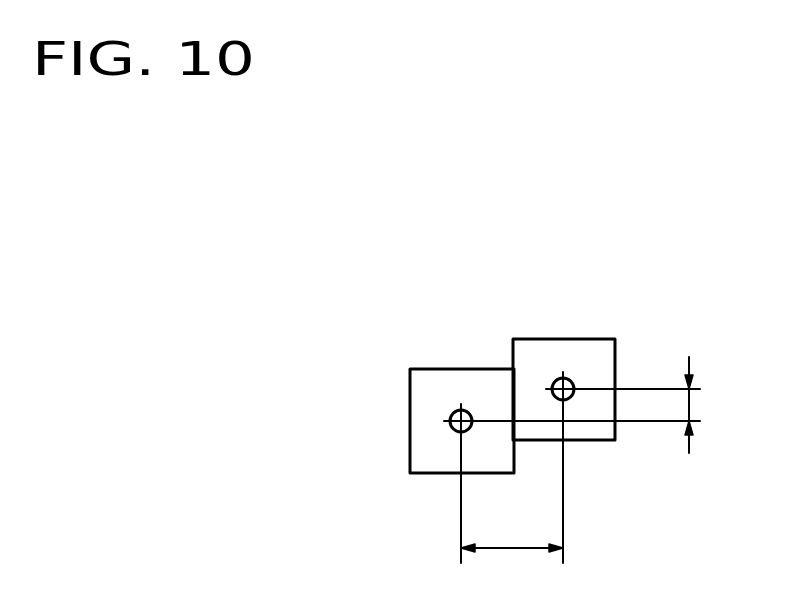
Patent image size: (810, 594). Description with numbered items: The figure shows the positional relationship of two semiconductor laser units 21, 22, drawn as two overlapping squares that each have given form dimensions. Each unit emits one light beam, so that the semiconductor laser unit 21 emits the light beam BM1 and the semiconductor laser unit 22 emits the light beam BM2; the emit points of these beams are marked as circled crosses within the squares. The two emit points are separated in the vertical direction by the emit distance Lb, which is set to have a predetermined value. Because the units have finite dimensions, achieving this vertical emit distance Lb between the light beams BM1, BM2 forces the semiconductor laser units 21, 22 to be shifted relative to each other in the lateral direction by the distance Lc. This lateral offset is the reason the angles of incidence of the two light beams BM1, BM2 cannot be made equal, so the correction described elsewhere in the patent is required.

The semiconductor laser unit 21 is at (557, 347).
The semiconductor laser unit 22 is at (453, 378).
The light beam BM1 is at (573, 380).
The light beam BM2 is at (452, 431).
The emit distance Lb is at (730, 405).
The lateral shift distance Lc is at (512, 523).